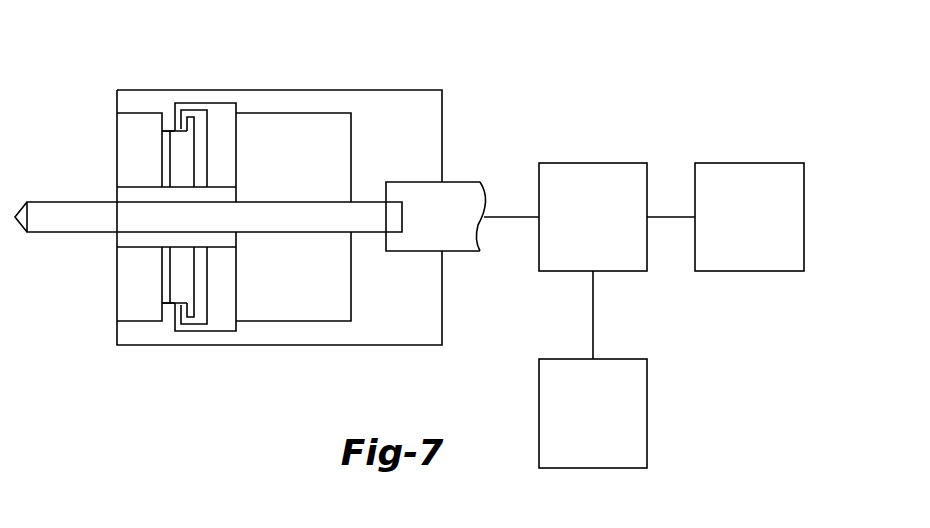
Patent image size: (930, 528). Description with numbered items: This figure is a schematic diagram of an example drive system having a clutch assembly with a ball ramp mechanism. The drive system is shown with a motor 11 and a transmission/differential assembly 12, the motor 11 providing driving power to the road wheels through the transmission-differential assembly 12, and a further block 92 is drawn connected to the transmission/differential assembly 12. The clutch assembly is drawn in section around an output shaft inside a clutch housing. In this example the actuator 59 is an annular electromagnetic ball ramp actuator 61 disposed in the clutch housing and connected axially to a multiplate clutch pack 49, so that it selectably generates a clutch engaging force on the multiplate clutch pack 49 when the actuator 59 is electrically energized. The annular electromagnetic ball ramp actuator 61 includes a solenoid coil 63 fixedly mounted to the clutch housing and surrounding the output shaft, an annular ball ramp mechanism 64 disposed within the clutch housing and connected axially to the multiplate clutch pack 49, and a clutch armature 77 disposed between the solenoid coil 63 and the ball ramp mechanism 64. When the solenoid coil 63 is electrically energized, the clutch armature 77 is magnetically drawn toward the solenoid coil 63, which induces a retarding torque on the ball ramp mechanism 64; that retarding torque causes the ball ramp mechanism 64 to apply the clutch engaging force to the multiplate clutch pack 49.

The motor 11 is at (583, 425).
The transmission/differential assembly 12 is at (583, 230).
The multiplate clutch pack 49 is at (283, 312).
The actuator 59 is at (130, 174).
The annular electromagnetic ball ramp actuator 61 is at (165, 95).
The solenoid coil 63 is at (131, 155).
The annular ball ramp mechanism 64 is at (222, 133).
The clutch armature 77 is at (186, 171).
The sensor 92 is at (740, 230).